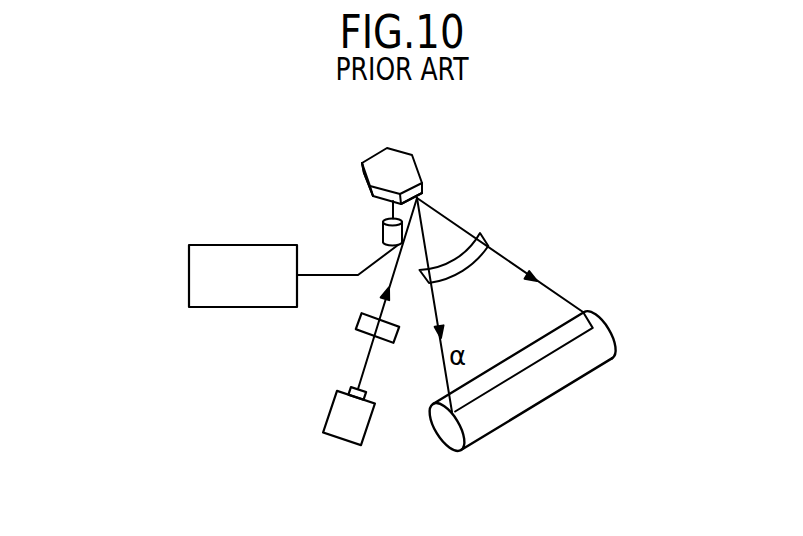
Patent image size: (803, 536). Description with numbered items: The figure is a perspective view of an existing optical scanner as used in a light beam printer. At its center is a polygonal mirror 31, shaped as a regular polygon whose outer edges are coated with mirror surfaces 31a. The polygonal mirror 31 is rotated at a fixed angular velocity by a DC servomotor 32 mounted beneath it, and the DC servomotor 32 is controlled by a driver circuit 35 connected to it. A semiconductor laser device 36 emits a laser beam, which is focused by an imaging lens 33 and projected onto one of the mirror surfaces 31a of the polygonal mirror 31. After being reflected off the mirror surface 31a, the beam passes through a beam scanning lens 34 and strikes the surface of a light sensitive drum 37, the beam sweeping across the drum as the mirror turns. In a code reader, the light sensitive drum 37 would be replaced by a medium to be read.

The polygonal mirror 31 is at (408, 170).
The mirror surface 31a is at (362, 175).
The DC servomotor 32 is at (385, 235).
The imaging lens 33 is at (363, 333).
The beam scanning lens 34 is at (492, 243).
The driver circuit 35 is at (190, 275).
The semiconductor laser device 36 is at (330, 418).
The light sensitive drum 37 is at (595, 355).